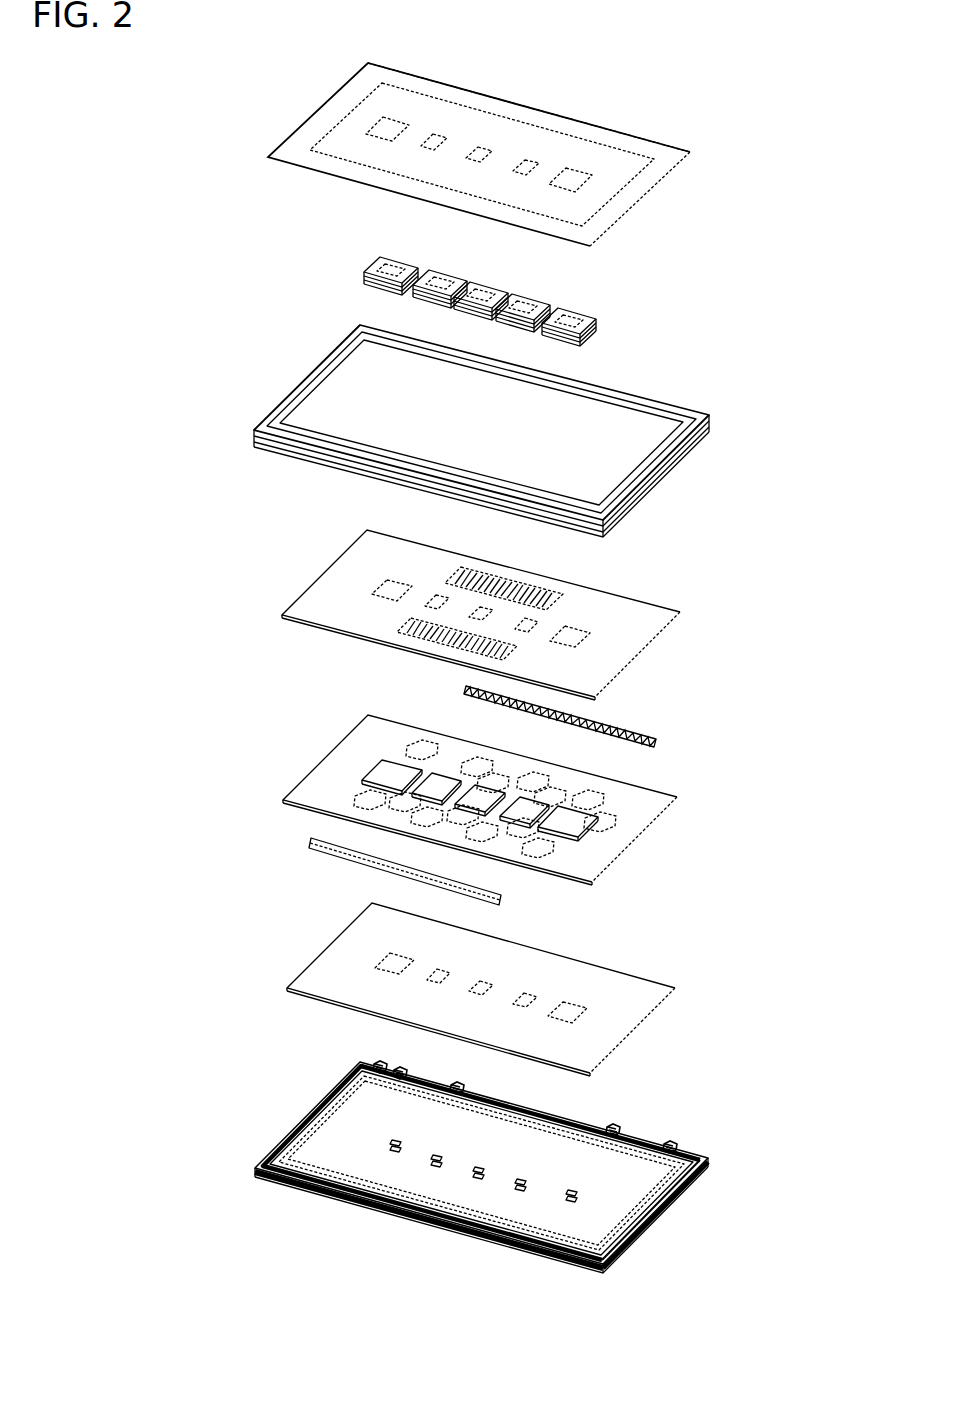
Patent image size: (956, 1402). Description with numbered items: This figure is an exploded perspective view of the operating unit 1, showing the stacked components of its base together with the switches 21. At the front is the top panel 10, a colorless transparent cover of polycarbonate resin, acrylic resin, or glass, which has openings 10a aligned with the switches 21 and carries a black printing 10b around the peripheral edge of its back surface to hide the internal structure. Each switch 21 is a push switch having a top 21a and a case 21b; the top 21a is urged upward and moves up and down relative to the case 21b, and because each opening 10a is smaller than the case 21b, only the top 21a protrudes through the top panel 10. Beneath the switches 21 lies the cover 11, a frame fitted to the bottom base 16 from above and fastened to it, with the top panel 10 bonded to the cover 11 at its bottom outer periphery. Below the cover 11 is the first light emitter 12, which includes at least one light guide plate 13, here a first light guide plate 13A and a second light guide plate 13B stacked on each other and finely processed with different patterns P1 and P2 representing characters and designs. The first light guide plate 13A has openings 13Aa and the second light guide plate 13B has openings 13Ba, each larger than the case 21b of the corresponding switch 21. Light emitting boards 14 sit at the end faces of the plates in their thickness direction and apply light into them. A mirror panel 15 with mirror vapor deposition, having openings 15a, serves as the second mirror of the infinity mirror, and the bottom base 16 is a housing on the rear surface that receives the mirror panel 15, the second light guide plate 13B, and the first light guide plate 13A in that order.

The operating unit 1 is at (645, 74).
The top panel 10 is at (452, 146).
The openings 10a is at (572, 175).
The black printing 10b is at (492, 105).
The switches 21 is at (404, 286).
The top 21a is at (394, 258).
The case 21b is at (384, 286).
The cover 11 is at (302, 378).
The first light emitter 12 is at (394, 717).
The light guide plate 13 is at (419, 717).
The first light guide plate 13A is at (419, 615).
The openings 13Aa is at (573, 638).
The pattern P1 is at (482, 633).
The second light guide plate 13B is at (417, 800).
The openings 13Ba is at (572, 822).
The pattern P2 is at (513, 797).
The light emitting boards 14 is at (460, 690).
The mirror panel 15 is at (444, 989).
The openings 15a is at (573, 1008).
The bottom base 16 is at (303, 1108).